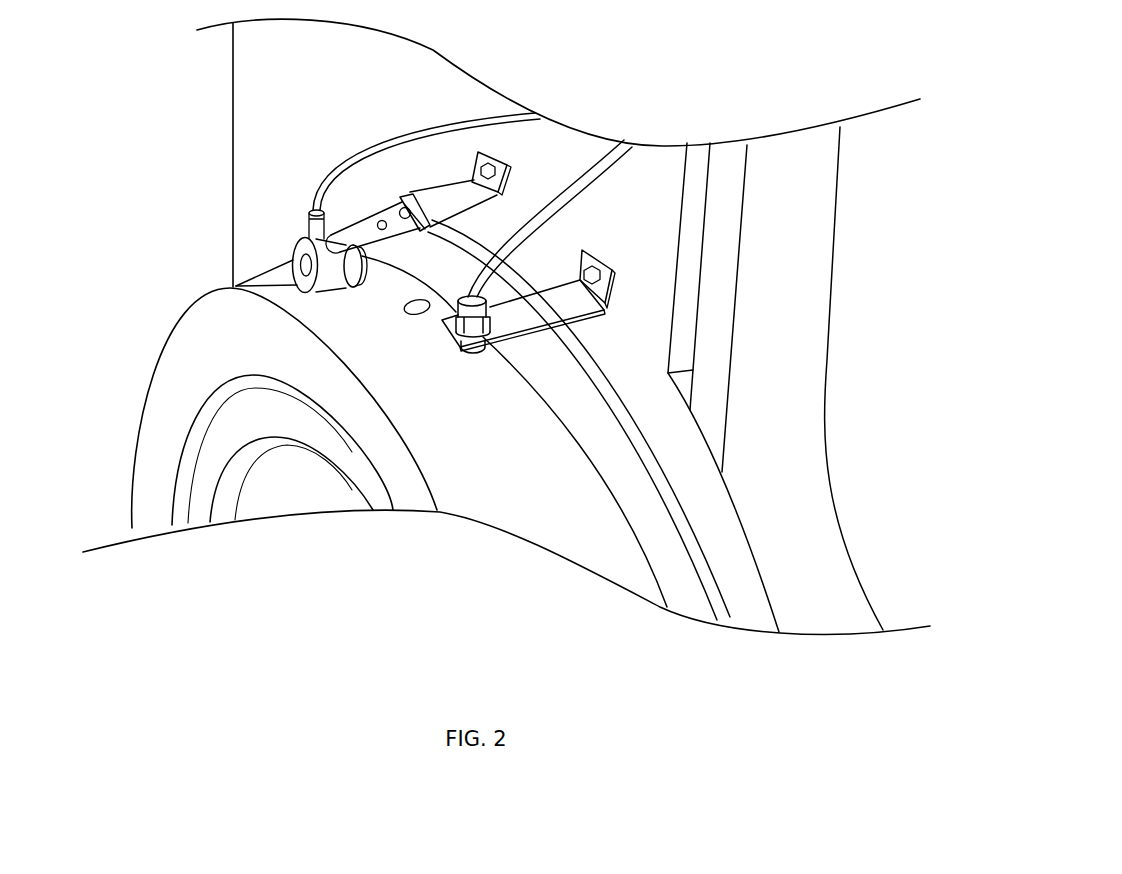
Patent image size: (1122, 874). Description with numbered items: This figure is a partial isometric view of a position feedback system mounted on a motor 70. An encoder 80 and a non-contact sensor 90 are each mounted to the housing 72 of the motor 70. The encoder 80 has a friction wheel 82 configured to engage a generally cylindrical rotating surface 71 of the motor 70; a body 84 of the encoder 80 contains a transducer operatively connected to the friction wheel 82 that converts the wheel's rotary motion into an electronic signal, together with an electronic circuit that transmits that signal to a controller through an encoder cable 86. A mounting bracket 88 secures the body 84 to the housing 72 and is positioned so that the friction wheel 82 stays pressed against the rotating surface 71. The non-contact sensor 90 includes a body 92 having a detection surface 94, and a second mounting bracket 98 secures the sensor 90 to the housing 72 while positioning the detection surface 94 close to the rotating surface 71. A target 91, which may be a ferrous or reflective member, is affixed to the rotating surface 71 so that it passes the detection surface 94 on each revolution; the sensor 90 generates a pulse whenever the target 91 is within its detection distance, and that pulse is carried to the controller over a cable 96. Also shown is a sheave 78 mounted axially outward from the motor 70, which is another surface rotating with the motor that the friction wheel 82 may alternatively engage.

The motor 70 is at (145, 180).
The rotating surface 71 is at (504, 489).
The housing 72 is at (808, 483).
The sheave 78 is at (274, 493).
The encoder 80 is at (334, 266).
The friction wheel 82 is at (366, 263).
The body 84 is at (328, 287).
The encoder cable 86 is at (430, 137).
The mounting bracket 88 is at (391, 217).
The sensor 90 is at (456, 286).
The target 91 is at (400, 316).
The body 92 is at (507, 334).
The detection surface 94 is at (470, 372).
The cable 96 is at (574, 197).
The mounting bracket 98 is at (457, 325).